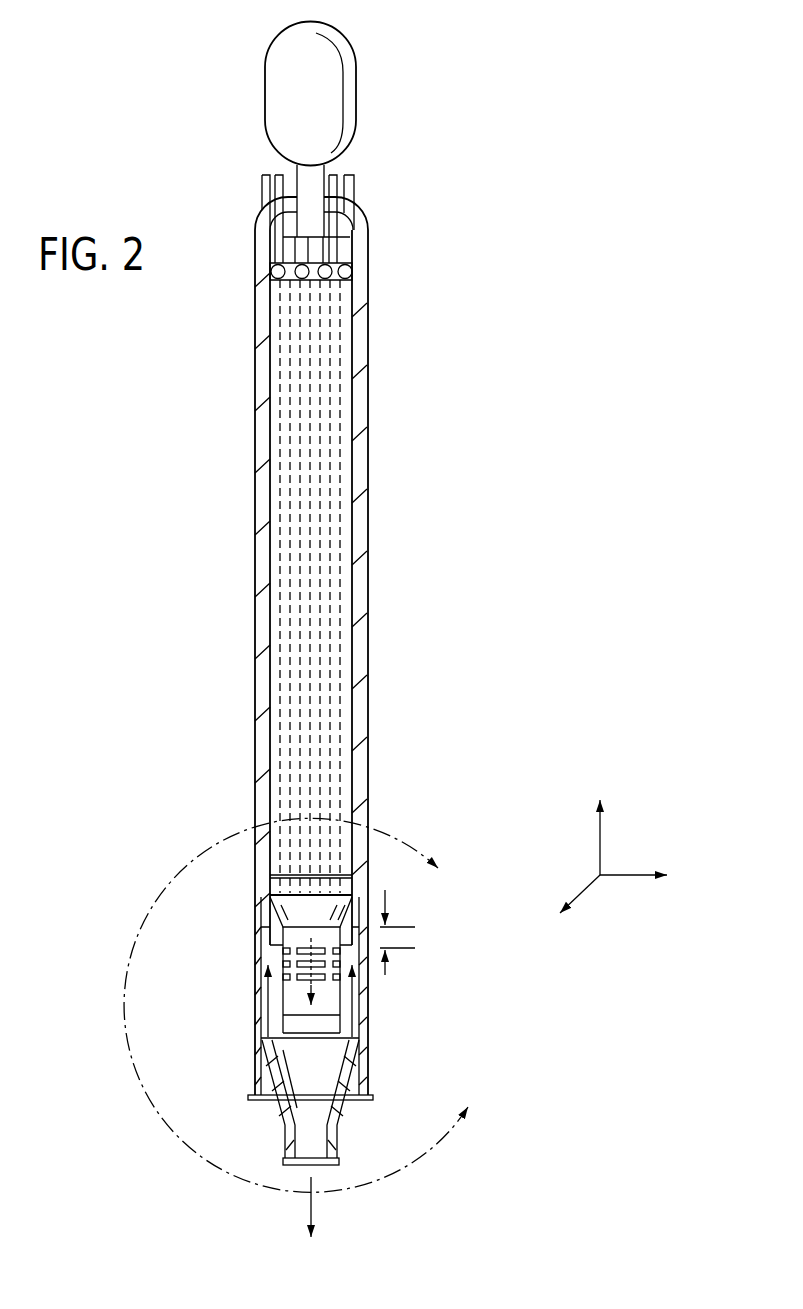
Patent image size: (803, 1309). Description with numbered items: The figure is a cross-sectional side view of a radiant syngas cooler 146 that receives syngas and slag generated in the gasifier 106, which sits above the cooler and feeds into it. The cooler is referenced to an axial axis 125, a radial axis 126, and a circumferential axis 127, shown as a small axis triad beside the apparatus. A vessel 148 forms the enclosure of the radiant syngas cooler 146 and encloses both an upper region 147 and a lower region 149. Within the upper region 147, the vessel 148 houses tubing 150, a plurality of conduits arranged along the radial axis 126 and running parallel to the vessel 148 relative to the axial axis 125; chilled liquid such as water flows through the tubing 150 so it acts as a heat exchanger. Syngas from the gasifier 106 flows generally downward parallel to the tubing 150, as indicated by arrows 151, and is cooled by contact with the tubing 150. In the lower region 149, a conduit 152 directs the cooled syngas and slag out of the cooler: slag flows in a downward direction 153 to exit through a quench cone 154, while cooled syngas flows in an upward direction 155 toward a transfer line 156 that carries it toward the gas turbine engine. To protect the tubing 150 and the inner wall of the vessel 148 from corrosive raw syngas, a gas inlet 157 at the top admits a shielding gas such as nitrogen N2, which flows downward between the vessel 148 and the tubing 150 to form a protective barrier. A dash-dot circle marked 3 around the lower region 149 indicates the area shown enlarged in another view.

The gasifier 106 is at (357, 37).
The gas inlet 157 is at (248, 208).
The nitrogen N2 is at (247, 246).
The radiant syngas cooler 146 is at (309, 648).
The upper region 147 is at (375, 447).
The vessel 148 is at (362, 372).
The tubing 150 is at (285, 477).
The arrows 151 is at (232, 625).
The lower region 149 is at (272, 945).
The conduit 152 is at (282, 958).
The upward direction 155 is at (266, 1020).
The transfer line 156 is at (395, 920).
The quench cone 154 is at (340, 1113).
The downward direction 153 is at (316, 1200).
The section view 3 indicator 3 is at (307, 1005).
The axial axis 125 is at (603, 828).
The radial axis 126 is at (633, 877).
The circumferential axis 127 is at (580, 893).